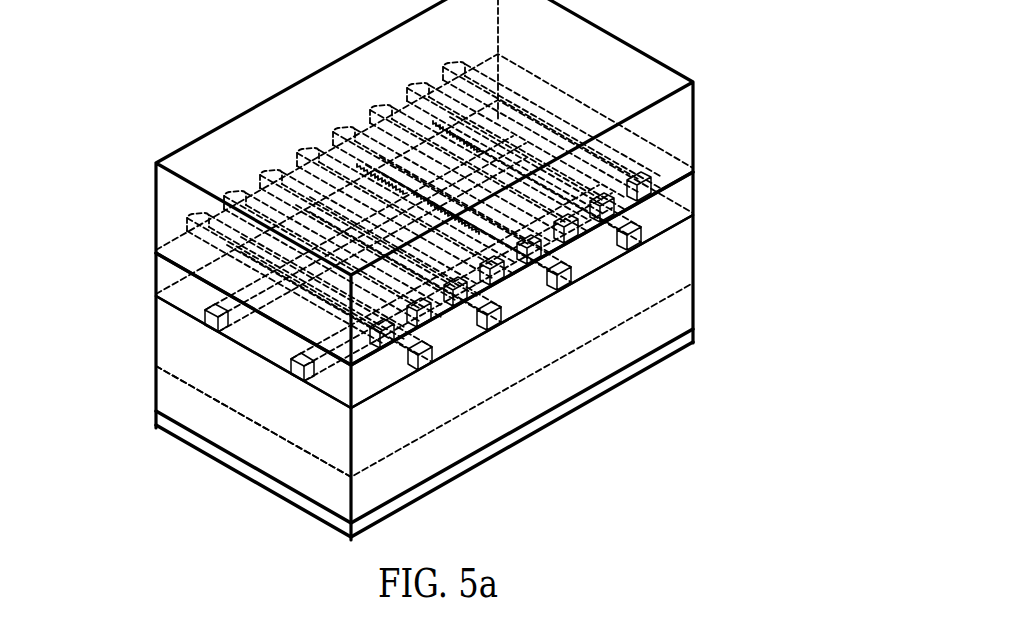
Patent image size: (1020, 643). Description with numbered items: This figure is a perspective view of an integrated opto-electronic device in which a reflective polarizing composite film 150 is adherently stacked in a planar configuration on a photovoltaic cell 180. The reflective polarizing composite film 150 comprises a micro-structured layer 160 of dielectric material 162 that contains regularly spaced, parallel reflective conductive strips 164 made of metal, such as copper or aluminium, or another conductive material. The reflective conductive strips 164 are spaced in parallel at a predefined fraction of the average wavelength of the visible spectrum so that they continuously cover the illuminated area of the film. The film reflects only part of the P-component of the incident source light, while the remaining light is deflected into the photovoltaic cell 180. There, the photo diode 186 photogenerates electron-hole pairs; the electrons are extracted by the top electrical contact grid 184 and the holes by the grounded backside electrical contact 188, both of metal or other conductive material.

The reflective polarizing composite film 150 is at (703, 82).
The micro-structured layer 160 is at (703, 162).
The dielectric material 162 is at (166, 206).
The reflective conductive strips 164 is at (644, 187).
The photovoltaic cell 180 is at (703, 170).
The top electrical contact grid 184 is at (206, 328).
The photo diode 186 is at (143, 295).
The backside electrical contact 188 is at (682, 342).